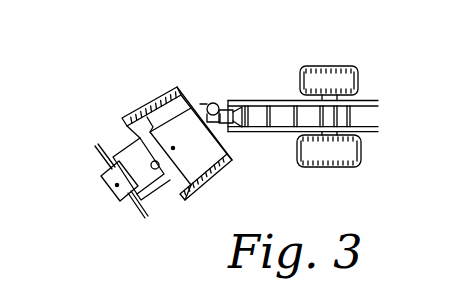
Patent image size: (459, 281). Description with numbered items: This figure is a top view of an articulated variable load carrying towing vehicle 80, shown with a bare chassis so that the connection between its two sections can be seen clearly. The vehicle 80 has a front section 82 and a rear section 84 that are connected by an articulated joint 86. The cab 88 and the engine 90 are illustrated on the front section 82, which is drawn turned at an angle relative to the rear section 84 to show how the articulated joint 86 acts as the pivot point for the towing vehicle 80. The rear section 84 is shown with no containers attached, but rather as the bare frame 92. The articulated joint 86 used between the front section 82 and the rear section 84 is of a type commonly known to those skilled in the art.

The variable load carrying vehicle 80 is at (112, 113).
The front section 82 is at (143, 97).
The rear section 84 is at (276, 61).
The articulated joint 86 is at (208, 103).
The cab 88 is at (189, 124).
The engine 90 is at (114, 170).
The bare frame 92 is at (368, 124).